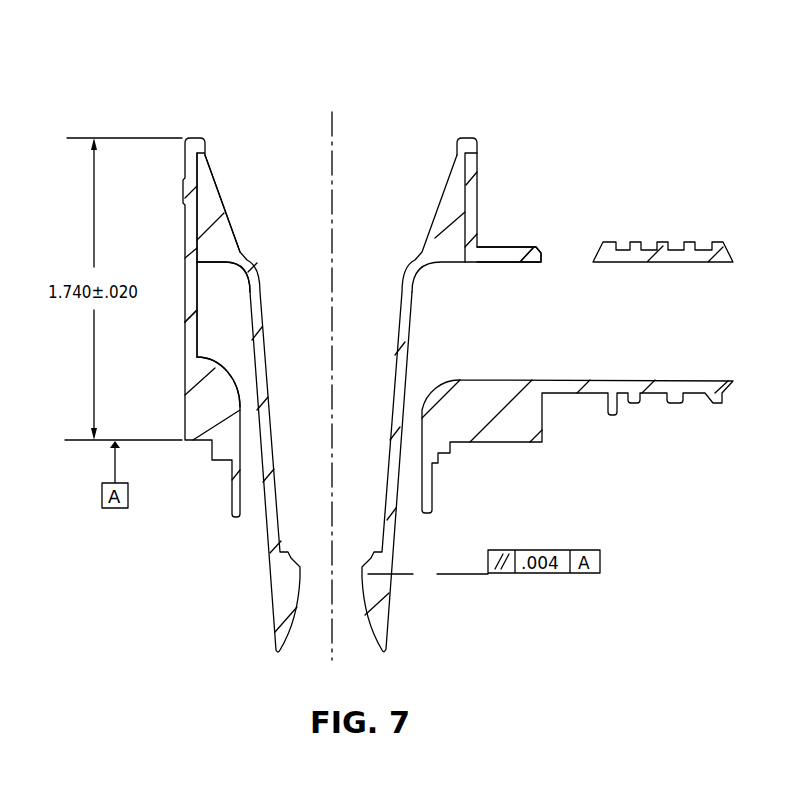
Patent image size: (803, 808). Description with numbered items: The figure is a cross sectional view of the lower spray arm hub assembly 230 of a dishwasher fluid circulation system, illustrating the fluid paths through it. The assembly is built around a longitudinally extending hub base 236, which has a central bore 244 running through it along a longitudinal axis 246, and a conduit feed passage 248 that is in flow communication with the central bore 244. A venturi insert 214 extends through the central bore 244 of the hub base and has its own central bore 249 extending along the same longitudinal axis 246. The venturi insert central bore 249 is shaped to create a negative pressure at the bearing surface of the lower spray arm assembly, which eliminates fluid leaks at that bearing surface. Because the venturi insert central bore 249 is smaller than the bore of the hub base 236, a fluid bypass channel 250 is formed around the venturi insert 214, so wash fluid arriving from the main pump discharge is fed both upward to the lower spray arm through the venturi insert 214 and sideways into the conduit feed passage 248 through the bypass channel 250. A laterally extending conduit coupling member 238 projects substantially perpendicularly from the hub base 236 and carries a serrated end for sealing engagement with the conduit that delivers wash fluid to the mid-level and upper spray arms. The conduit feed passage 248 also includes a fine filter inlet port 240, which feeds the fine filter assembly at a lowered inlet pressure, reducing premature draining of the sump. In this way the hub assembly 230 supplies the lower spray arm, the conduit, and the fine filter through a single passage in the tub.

The lower spray arm hub assembly 230 is at (210, 62).
The venturi insert 214 is at (213, 183).
The venturi insert central bore 249 is at (232, 228).
The hub base 236 is at (184, 320).
The central bore 244 is at (225, 380).
The fluid bypass channel 250 is at (253, 503).
The longitudinal axis 246 is at (333, 132).
The fine filter inlet port 240 is at (568, 248).
The conduit coupling member 238 is at (641, 235).
The conduit feed passage 248 is at (550, 353).